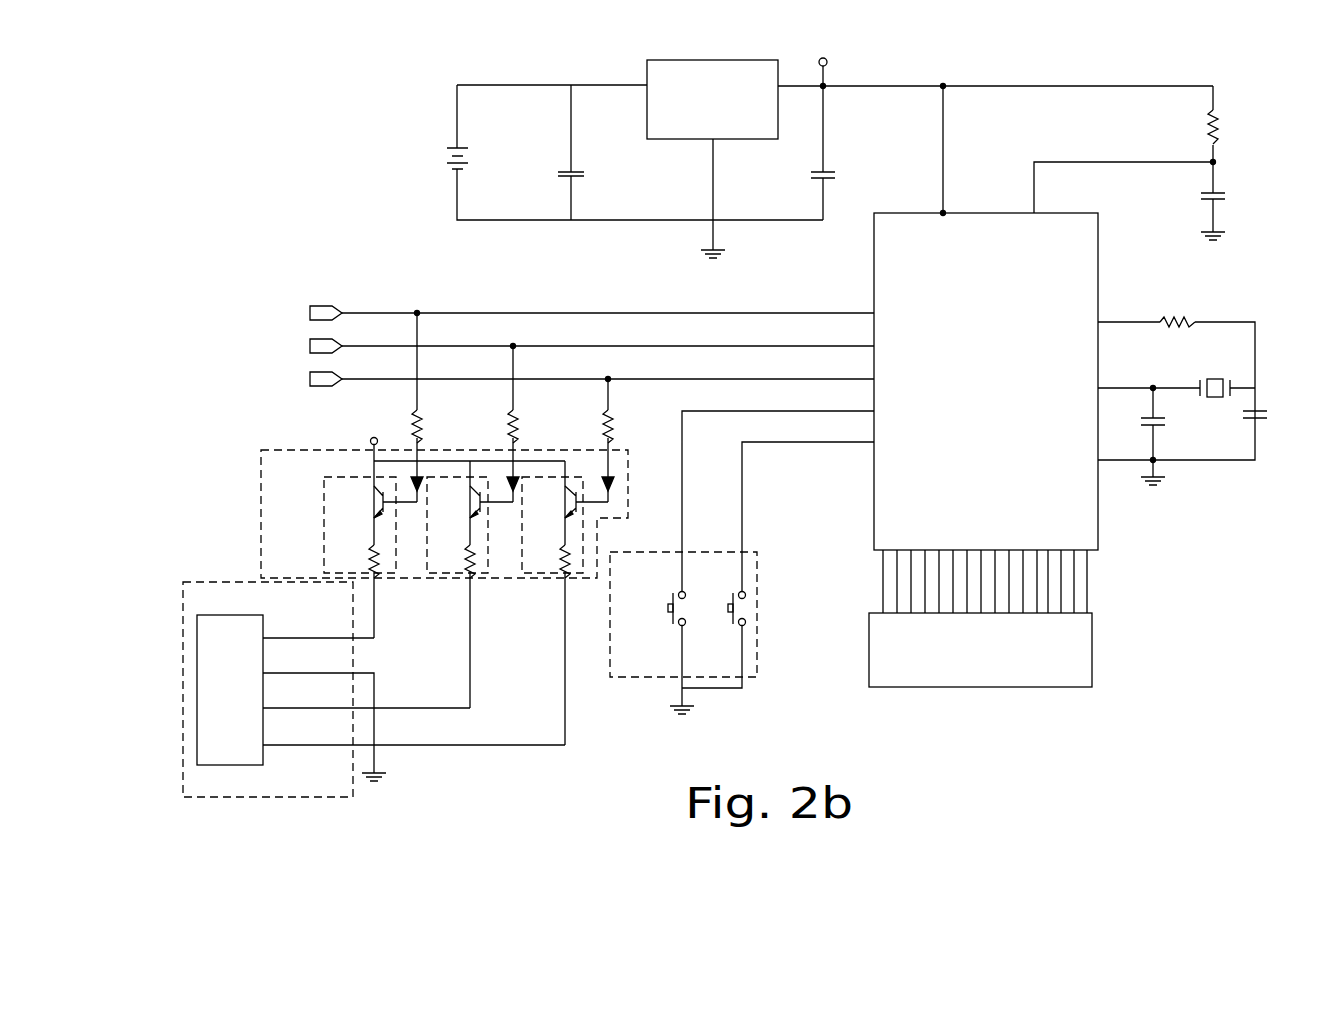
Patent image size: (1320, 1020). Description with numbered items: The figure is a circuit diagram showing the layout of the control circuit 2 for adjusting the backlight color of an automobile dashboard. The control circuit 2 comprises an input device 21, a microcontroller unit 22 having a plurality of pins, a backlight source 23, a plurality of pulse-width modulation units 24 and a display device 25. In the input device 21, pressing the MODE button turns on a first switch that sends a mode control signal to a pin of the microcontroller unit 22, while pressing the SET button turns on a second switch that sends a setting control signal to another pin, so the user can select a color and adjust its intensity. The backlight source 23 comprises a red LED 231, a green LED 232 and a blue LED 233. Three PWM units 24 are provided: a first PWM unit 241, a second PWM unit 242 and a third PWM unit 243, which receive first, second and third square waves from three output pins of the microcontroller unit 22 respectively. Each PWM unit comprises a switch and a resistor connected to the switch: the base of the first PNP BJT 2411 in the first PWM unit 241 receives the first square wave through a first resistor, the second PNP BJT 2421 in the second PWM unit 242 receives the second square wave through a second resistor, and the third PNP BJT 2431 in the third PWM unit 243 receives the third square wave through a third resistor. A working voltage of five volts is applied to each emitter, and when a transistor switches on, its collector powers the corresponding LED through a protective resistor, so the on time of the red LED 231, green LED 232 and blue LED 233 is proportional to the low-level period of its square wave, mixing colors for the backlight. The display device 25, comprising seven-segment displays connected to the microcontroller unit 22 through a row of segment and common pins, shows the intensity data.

The control circuit 2 is at (1278, 95).
The input device 21 is at (757, 652).
The microcontroller unit 22 is at (1098, 518).
The backlight source 23 is at (325, 798).
The pulse-width modulation unit 24 is at (261, 475).
The display device 25 is at (1092, 648).
The red LED 231 is at (414, 729).
The green LED 232 is at (366, 692).
The blue LED 233 is at (318, 623).
The first PWM unit 241 is at (526, 577).
The second PWM unit 242 is at (428, 577).
The third PWM unit 243 is at (324, 515).
The first PNP BJT 2411 is at (567, 502).
The second PNP BJT 2421 is at (472, 502).
The third PNP BJT 2431 is at (375, 502).